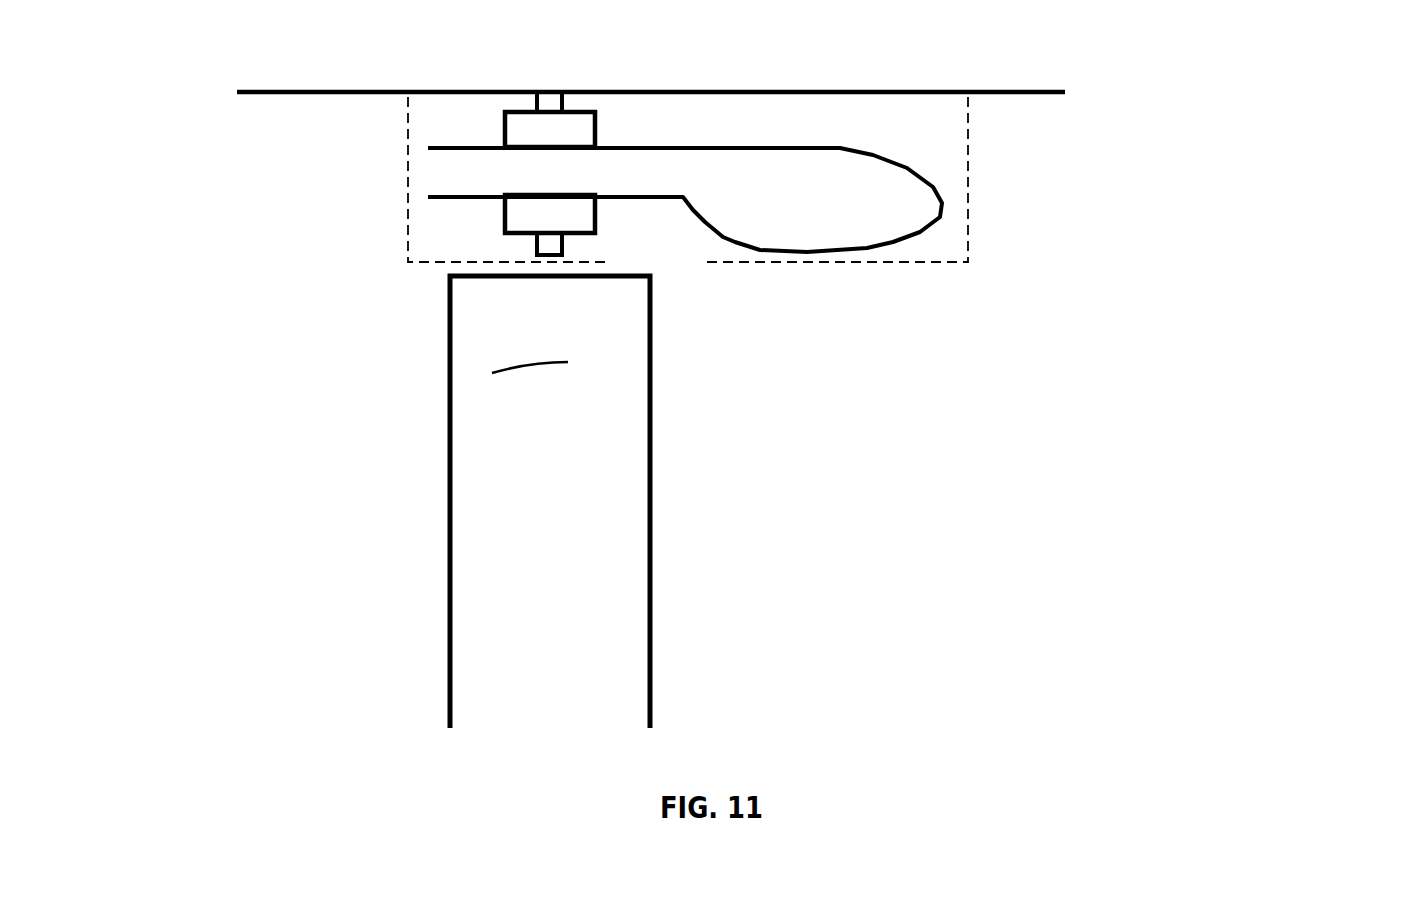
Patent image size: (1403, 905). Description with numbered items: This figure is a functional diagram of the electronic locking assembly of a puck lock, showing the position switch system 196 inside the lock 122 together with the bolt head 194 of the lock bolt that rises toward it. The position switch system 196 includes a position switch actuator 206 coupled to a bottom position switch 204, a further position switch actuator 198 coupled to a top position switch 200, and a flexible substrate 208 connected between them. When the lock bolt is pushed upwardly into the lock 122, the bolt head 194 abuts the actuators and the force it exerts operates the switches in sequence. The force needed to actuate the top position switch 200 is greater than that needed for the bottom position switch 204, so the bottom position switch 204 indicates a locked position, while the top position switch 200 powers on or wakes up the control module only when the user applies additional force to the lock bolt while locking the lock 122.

The lock 122 is at (270, 90).
The bolt head 194 is at (540, 356).
The position switch system 196 is at (963, 263).
The position switch actuator 198 is at (553, 102).
The top position switch 200 is at (577, 132).
The bottom position switch 204 is at (527, 213).
The position switch actuator 206 is at (545, 242).
The flexible substrate 208 is at (935, 197).